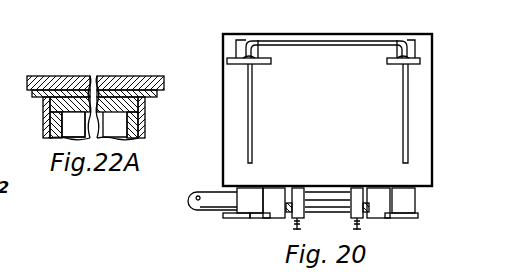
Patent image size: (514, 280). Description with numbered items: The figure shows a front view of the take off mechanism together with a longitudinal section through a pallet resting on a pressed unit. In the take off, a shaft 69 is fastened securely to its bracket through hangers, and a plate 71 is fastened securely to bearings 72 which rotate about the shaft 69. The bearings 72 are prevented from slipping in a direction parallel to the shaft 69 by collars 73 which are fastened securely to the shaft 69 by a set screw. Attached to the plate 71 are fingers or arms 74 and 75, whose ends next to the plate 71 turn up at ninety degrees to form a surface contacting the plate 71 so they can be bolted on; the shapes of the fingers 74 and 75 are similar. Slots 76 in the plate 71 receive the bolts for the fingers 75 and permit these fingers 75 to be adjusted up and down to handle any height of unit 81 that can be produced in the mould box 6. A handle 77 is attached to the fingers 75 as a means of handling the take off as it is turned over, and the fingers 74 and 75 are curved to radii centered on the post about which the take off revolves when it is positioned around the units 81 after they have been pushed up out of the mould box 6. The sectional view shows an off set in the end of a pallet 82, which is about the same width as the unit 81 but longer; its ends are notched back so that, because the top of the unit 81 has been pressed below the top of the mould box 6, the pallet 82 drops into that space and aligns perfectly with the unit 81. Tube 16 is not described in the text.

In FIG. 22A, the mould box 6 is at (43, 125).
In FIG. 22A, the unit 81 is at (145, 108).
In FIG. 22A, the pallet 82 is at (101, 60).
In FIG. 20, the tube 16 is at (403, 99).
In FIG. 20, the shaft 69 is at (190, 201).
In FIG. 20, the plate 71 is at (434, 109).
In FIG. 20, the bearing 72 is at (281, 218).
In FIG. 20, the collar 73 is at (352, 222).
In FIG. 20, the finger 74 is at (236, 218).
In FIG. 20, the finger 75 is at (227, 62).
In FIG. 20, the slot 76 is at (252, 101).
In FIG. 20, the handle 77 is at (335, 39).